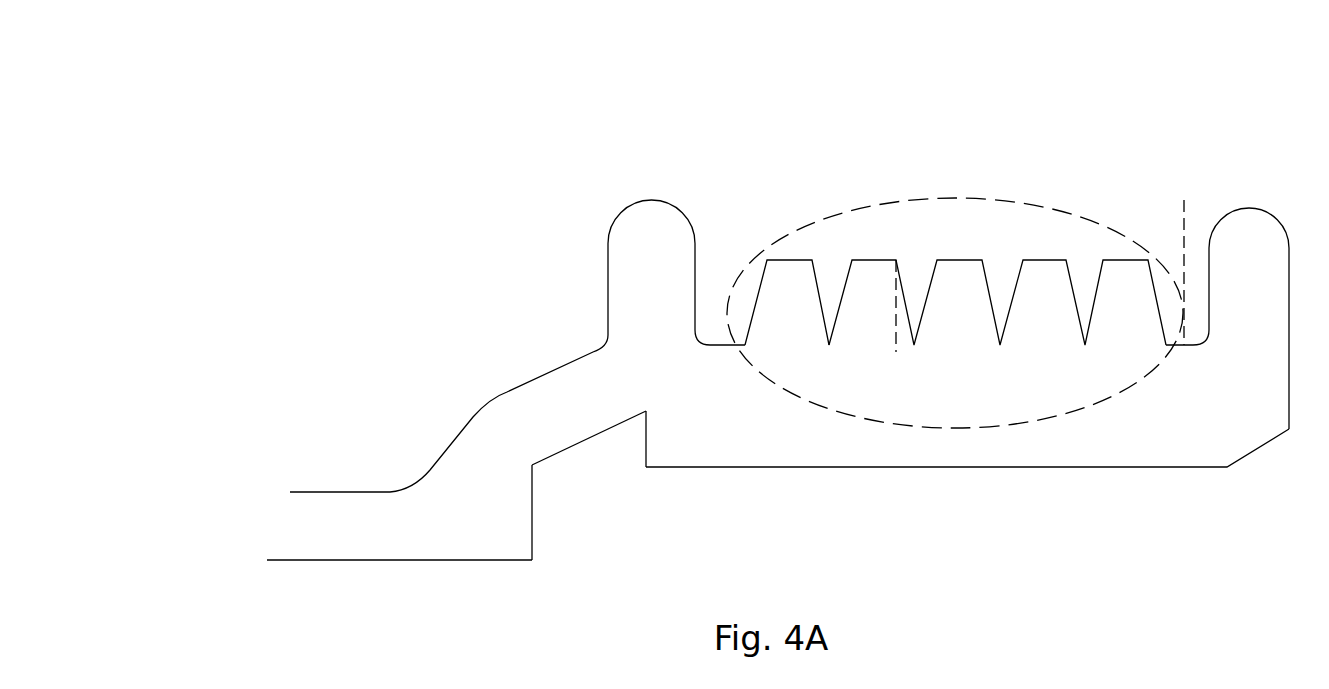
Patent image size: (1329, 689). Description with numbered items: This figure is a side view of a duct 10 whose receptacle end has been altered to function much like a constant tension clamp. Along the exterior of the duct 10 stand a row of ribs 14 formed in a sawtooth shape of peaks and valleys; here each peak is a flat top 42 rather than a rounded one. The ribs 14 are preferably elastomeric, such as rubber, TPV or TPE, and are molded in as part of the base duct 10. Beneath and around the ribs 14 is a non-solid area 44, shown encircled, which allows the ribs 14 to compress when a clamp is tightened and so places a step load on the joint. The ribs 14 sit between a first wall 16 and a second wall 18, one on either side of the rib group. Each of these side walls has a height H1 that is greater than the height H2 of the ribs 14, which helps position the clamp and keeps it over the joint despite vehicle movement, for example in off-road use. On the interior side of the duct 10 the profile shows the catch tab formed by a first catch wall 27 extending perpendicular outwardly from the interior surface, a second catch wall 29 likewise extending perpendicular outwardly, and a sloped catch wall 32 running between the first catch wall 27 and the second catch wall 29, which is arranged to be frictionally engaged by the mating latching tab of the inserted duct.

The duct 10 is at (268, 525).
The standing ribs 14 is at (938, 226).
The first wall 16 is at (1257, 193).
The second wall 18 is at (648, 185).
The first catch wall 27 is at (532, 518).
The second catch wall 29 is at (645, 442).
The sloped catch wall 32 is at (582, 443).
The flat top 42 is at (793, 300).
The non-solid area 44 is at (822, 410).
The height of side wall H1 is at (1185, 200).
The height of ribs H2 is at (888, 300).